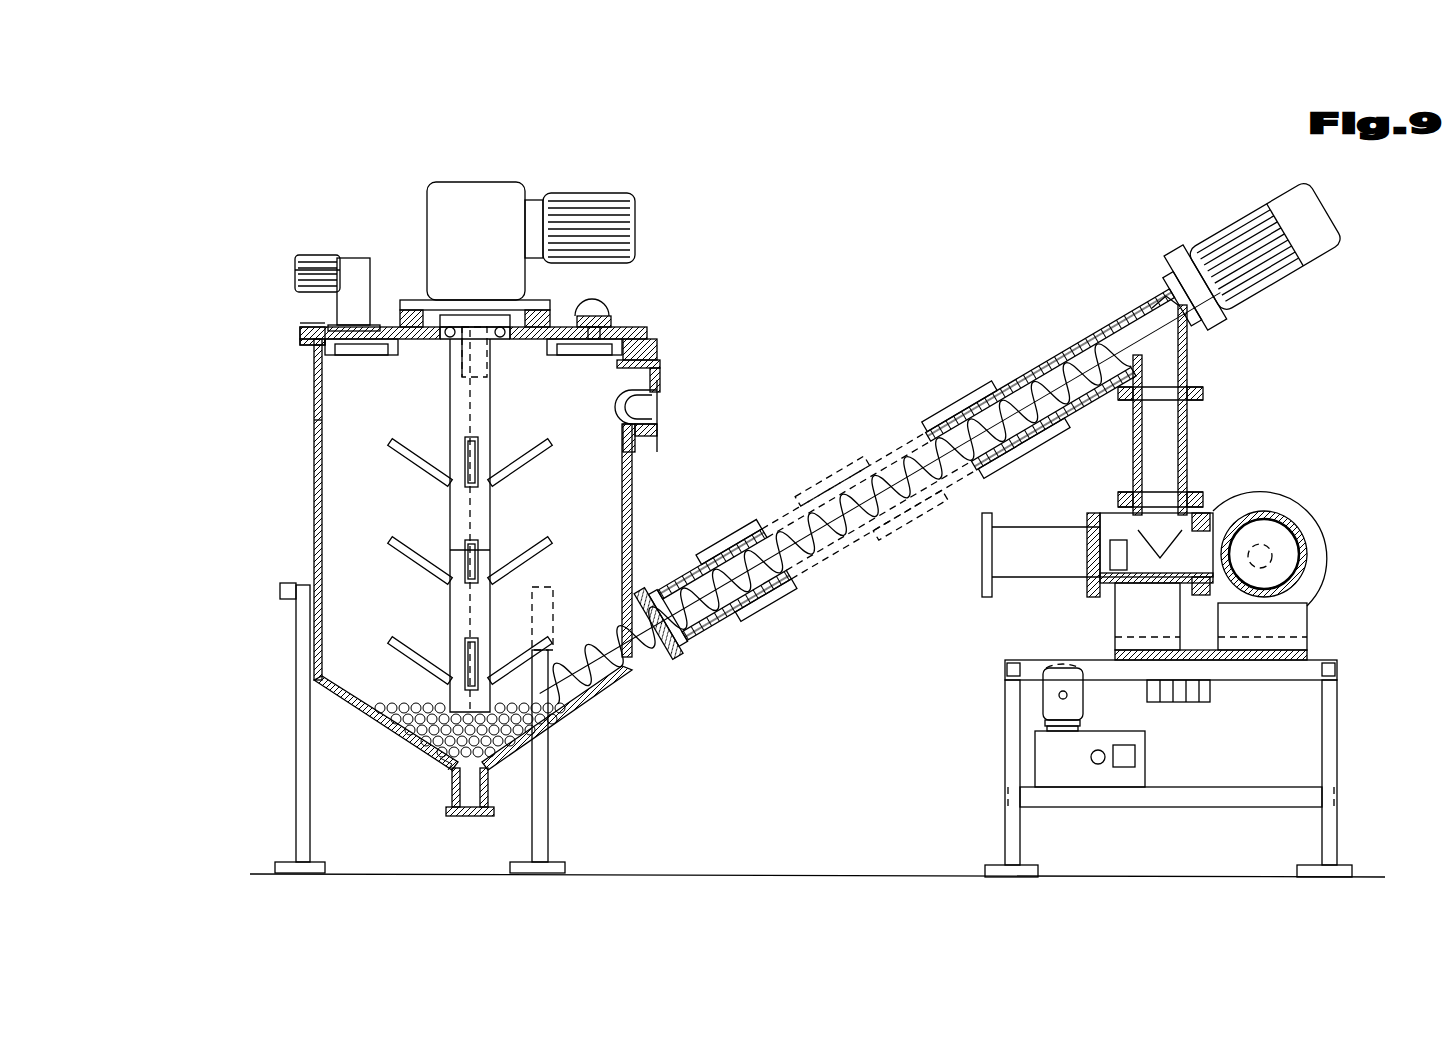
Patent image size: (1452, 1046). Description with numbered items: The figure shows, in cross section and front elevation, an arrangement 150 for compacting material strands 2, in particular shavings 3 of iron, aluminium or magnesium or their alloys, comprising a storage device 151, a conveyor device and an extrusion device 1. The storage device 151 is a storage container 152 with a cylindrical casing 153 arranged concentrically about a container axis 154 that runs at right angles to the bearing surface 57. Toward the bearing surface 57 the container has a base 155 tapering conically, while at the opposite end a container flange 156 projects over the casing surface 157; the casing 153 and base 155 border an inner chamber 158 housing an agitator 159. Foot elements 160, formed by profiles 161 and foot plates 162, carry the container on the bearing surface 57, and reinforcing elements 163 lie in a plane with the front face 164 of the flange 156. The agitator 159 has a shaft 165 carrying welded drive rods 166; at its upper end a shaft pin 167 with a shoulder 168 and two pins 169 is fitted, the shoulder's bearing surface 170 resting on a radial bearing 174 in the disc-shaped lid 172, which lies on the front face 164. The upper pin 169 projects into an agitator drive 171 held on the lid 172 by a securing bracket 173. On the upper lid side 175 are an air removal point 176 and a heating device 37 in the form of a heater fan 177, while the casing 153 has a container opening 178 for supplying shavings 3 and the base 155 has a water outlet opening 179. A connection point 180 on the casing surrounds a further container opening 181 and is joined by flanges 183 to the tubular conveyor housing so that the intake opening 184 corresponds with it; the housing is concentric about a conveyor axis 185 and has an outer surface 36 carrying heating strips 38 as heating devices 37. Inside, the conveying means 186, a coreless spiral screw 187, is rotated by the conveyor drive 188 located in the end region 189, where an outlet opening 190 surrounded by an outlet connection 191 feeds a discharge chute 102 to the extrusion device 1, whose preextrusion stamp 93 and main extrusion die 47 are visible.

The extrusion device 1 is at (1148, 526).
The material strand 2 is at (433, 748).
The shavings 3 is at (442, 758).
The outer surface 36 is at (1062, 386).
The heating device 37 is at (290, 265).
The heating strips 38 is at (928, 464).
The main extrusion die 47 is at (1300, 487).
The bearing surface 57 is at (918, 868).
The preextrusion stamp 93 is at (1093, 565).
The discharge chute 102 is at (1169, 500).
The arrangement 150 is at (830, 770).
The storage device 151 is at (568, 283).
The storage container 152 is at (547, 522).
The cylindrical casing 153 is at (622, 505).
The container axis 154 is at (349, 519).
The base 155 is at (392, 742).
The container flange 156 is at (660, 342).
The casing surface 157 is at (316, 420).
The inner chamber 158 is at (437, 592).
The agitator 159 is at (460, 613).
The foot elements 160 is at (382, 759).
The profiles 161 is at (298, 652).
The foot plates 162 is at (315, 868).
The reinforcing elements 163 is at (330, 402).
The front face 164 is at (318, 327).
The shaft 165 is at (357, 648).
The drive rods 166 is at (350, 545).
The shaft pin 167 is at (487, 375).
The shoulder 168 is at (560, 265).
The pins 169 is at (458, 314).
The bearing surface 170 is at (424, 298).
The agitator drive 171 is at (572, 189).
The lid 172 is at (300, 333).
The securing bracket 173 is at (393, 322).
The radial bearing 174 is at (498, 300).
The upper lid side 175 is at (318, 322).
The air removal point 176 is at (610, 302).
The heater fan 177 is at (312, 262).
The container opening 178 is at (634, 407).
The water outlet opening 179 is at (475, 825).
The connection point 180 is at (931, 460).
The container opening 181 is at (668, 618).
The flanges 183 is at (663, 621).
The intake opening 184 is at (880, 493).
The conveyor axis 185 is at (869, 499).
The conveying means 186 is at (959, 406).
The coreless spiral screw 187 is at (1024, 448).
The conveyor drive 188 is at (1251, 255).
The end region 189 is at (1190, 290).
The outlet opening 190 is at (1163, 350).
The outlet connection 191 is at (1228, 405).